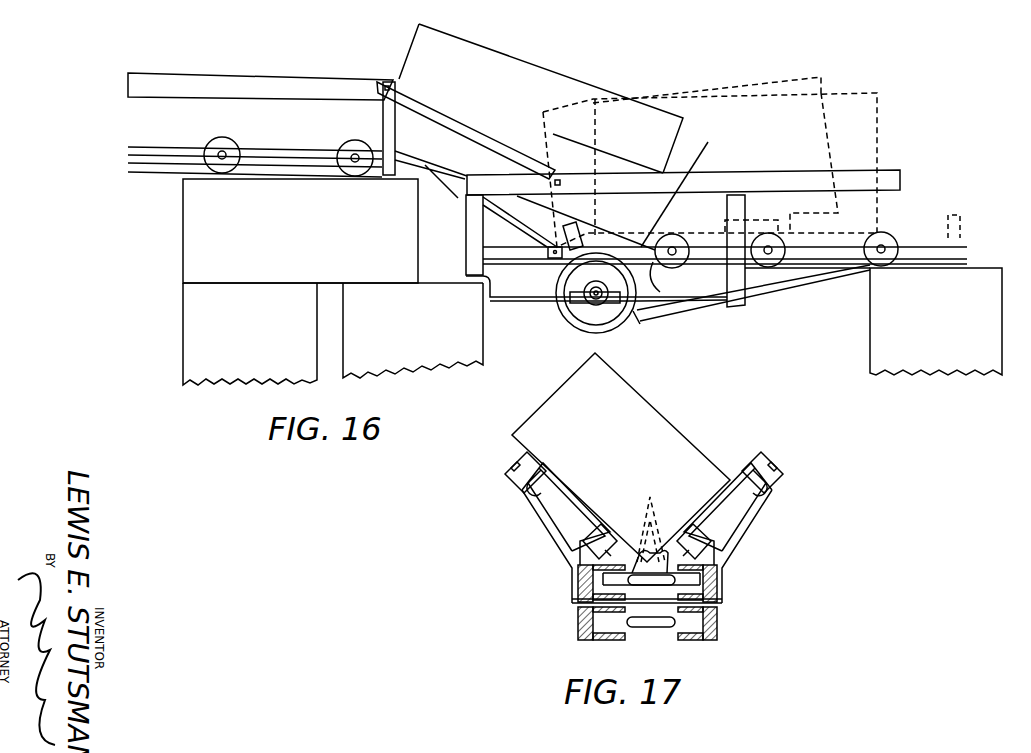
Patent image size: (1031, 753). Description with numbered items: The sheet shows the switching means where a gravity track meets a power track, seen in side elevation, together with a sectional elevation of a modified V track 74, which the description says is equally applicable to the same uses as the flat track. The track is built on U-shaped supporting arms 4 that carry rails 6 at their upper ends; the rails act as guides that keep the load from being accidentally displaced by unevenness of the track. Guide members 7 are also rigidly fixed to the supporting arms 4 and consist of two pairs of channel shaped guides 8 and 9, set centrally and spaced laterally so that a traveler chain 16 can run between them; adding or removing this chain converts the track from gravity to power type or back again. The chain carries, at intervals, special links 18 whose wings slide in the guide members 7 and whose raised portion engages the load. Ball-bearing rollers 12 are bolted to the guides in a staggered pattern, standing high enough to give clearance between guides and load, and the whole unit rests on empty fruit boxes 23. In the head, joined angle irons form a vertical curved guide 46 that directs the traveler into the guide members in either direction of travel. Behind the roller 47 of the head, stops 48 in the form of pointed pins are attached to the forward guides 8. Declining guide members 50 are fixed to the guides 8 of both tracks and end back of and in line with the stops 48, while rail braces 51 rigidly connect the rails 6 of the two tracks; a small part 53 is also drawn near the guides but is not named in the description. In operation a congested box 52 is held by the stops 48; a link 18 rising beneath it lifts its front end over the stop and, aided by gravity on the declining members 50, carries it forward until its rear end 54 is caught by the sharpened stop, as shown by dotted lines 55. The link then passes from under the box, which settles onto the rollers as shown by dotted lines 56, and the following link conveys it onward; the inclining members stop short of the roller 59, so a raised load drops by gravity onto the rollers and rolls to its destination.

In FIG. 16, the supporting arms 4 is at (380, 118).
In FIG. 17, the supporting arms 4 is at (737, 483).
In FIG. 16, the rails 6 is at (232, 83).
In FIG. 17, the rails 6 is at (535, 498).
In FIG. 16, the guide members 7 is at (917, 233).
In FIG. 16, the channel shaped guides 8 is at (128, 150).
In FIG. 16, the channel shaped guides 9 is at (128, 177).
In FIG. 16, the rollers 12 is at (213, 157).
In FIG. 17, the rollers 12 is at (782, 475).
In FIG. 16, the traveler chain 16 is at (628, 322).
In FIG. 17, the traveler chain 16 is at (653, 628).
In FIG. 16, the special links 18 is at (573, 237).
In FIG. 17, the special links 18 is at (717, 615).
In FIG. 16, the empty fruit boxes 23 is at (592, 282).
In FIG. 16, the vertical curved guide 46 is at (662, 275).
In FIG. 16, the roller 47 is at (663, 240).
In FIG. 16, the stops 48 is at (685, 184).
In FIG. 16, the declining guide members 50 is at (457, 192).
In FIG. 16, the rail braces 51 is at (442, 115).
In FIG. 16, the box 52 is at (528, 80).
In FIG. 17, the box 52 is at (621, 457).
In FIG. 16, the bracket 53 is at (637, 202).
In FIG. 16, the rear end 54 is at (396, 100).
In FIG. 16, the dotted lines 55 is at (830, 138).
In FIG. 16, the dotted lines 56 is at (883, 150).
In FIG. 16, the roller 59 is at (354, 164).
In FIG. 17, the V track 74 is at (762, 560).